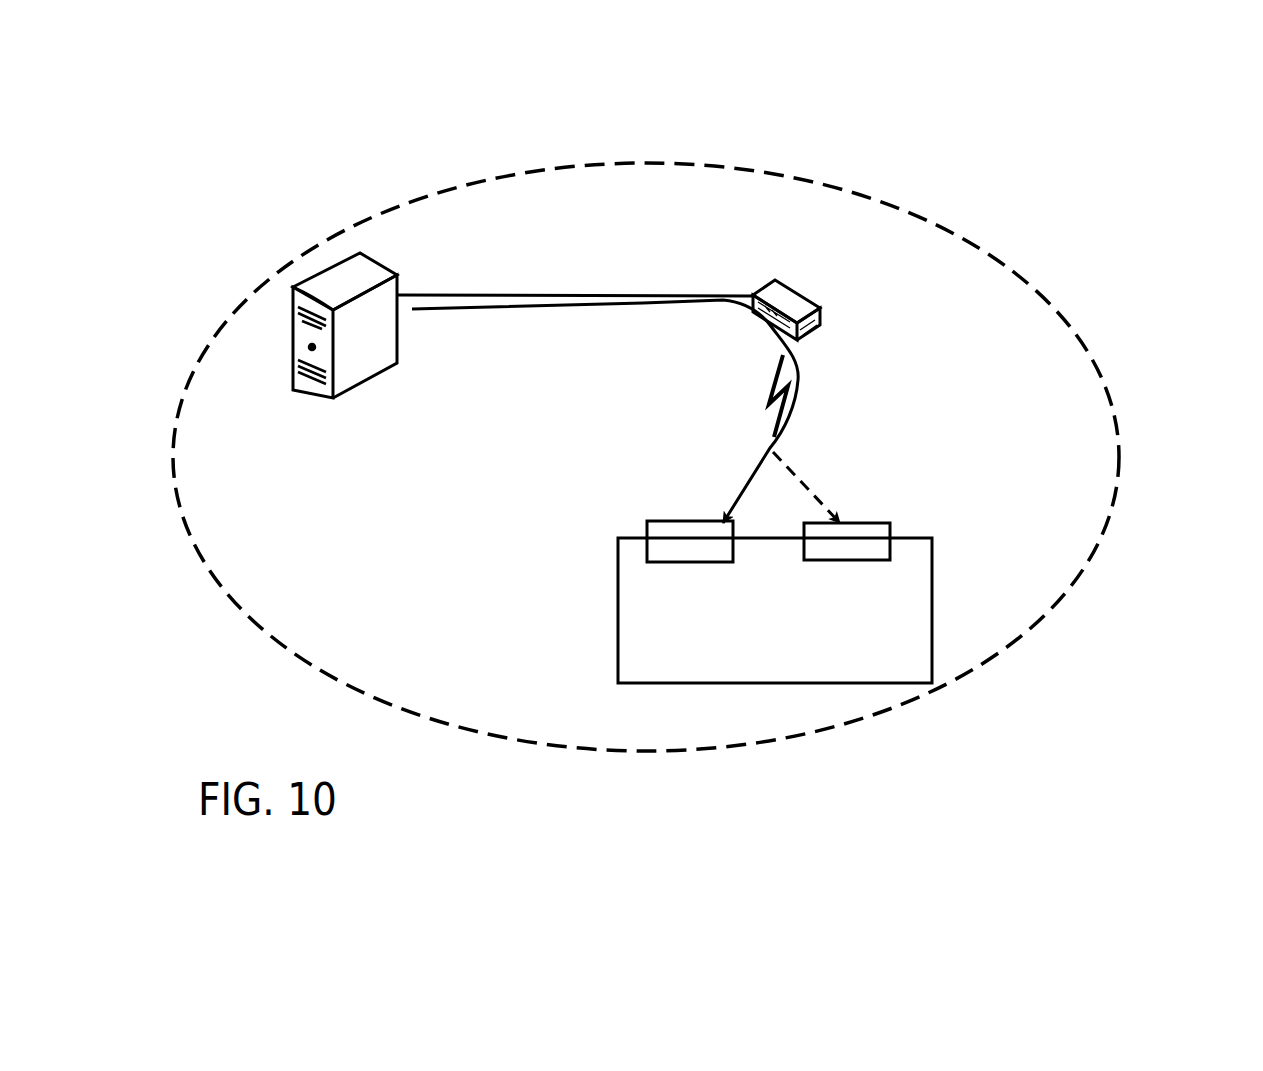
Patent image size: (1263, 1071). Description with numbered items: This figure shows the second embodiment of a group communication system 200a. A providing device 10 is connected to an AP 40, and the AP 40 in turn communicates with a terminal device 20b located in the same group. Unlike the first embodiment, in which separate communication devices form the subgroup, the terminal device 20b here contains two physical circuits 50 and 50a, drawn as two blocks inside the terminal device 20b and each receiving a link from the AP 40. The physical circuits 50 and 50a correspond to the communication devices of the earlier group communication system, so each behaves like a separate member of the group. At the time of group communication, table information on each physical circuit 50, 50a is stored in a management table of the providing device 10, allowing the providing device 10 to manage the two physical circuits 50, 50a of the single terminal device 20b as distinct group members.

The group communication system 200a is at (807, 73).
The providing device 10 is at (358, 250).
The AP 40 is at (795, 290).
The terminal device 20b is at (933, 686).
The physical circuit 50 is at (695, 562).
The physical circuit 50a is at (852, 560).